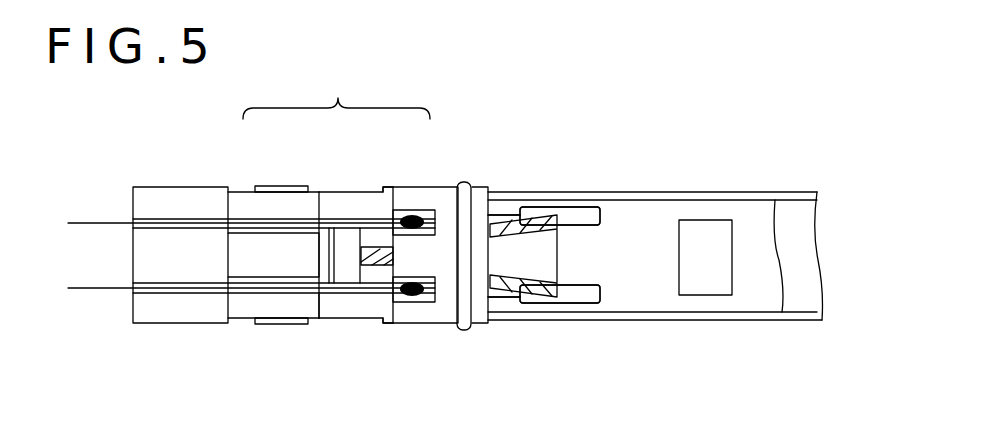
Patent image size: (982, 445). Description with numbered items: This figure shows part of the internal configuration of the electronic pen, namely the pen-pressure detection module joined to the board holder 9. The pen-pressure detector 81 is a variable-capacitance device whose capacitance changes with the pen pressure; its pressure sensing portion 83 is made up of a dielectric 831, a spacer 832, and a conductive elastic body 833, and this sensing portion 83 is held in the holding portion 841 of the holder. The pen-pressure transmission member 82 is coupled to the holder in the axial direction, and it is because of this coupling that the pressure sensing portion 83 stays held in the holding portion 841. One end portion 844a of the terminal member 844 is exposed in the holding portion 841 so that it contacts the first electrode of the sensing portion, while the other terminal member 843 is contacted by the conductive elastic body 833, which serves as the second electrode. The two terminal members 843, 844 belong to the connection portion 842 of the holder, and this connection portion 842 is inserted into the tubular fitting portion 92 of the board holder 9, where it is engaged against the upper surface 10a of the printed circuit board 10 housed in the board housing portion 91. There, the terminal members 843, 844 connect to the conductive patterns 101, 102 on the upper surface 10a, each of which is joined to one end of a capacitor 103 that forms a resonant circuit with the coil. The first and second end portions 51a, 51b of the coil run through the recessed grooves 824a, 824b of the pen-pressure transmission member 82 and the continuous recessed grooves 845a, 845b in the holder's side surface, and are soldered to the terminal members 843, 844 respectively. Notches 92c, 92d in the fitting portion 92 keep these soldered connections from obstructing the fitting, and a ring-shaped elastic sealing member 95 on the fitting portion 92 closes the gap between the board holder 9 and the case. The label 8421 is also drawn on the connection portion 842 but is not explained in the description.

The board holder 9 is at (787, 328).
The printed circuit board 10 is at (750, 313).
The upper surface of the printed circuit board 10a is at (763, 232).
The first end portion of the coil 51a is at (85, 221).
The second end portion of the coil 51b is at (85, 292).
The pen-pressure detector 81 is at (348, 327).
The pen-pressure transmission member 82 is at (156, 183).
The pressure sensing portion 83 is at (336, 93).
The board housing portion 91 is at (682, 313).
The fitting portion 92 is at (435, 316).
The notch 92c is at (438, 211).
The notch 92d is at (414, 303).
The sealing member 95 is at (463, 183).
The conductive pattern 101 is at (587, 212).
The conductive pattern 102 is at (584, 298).
The capacitor 103 is at (722, 262).
The recessed groove 824a is at (185, 220).
The recessed groove 824b is at (170, 292).
The dielectric 831 is at (358, 190).
The spacer 832 is at (331, 190).
The conductive elastic body 833 is at (318, 190).
The holding portion 841 is at (318, 300).
The connection portion 842 is at (539, 265).
The terminal body 8421 is at (497, 257).
The terminal member 843 is at (508, 216).
The terminal member 844 is at (507, 293).
The one end portion of the terminal member 844a is at (357, 257).
The recessed groove 845a is at (372, 190).
The recessed groove 845b is at (370, 320).